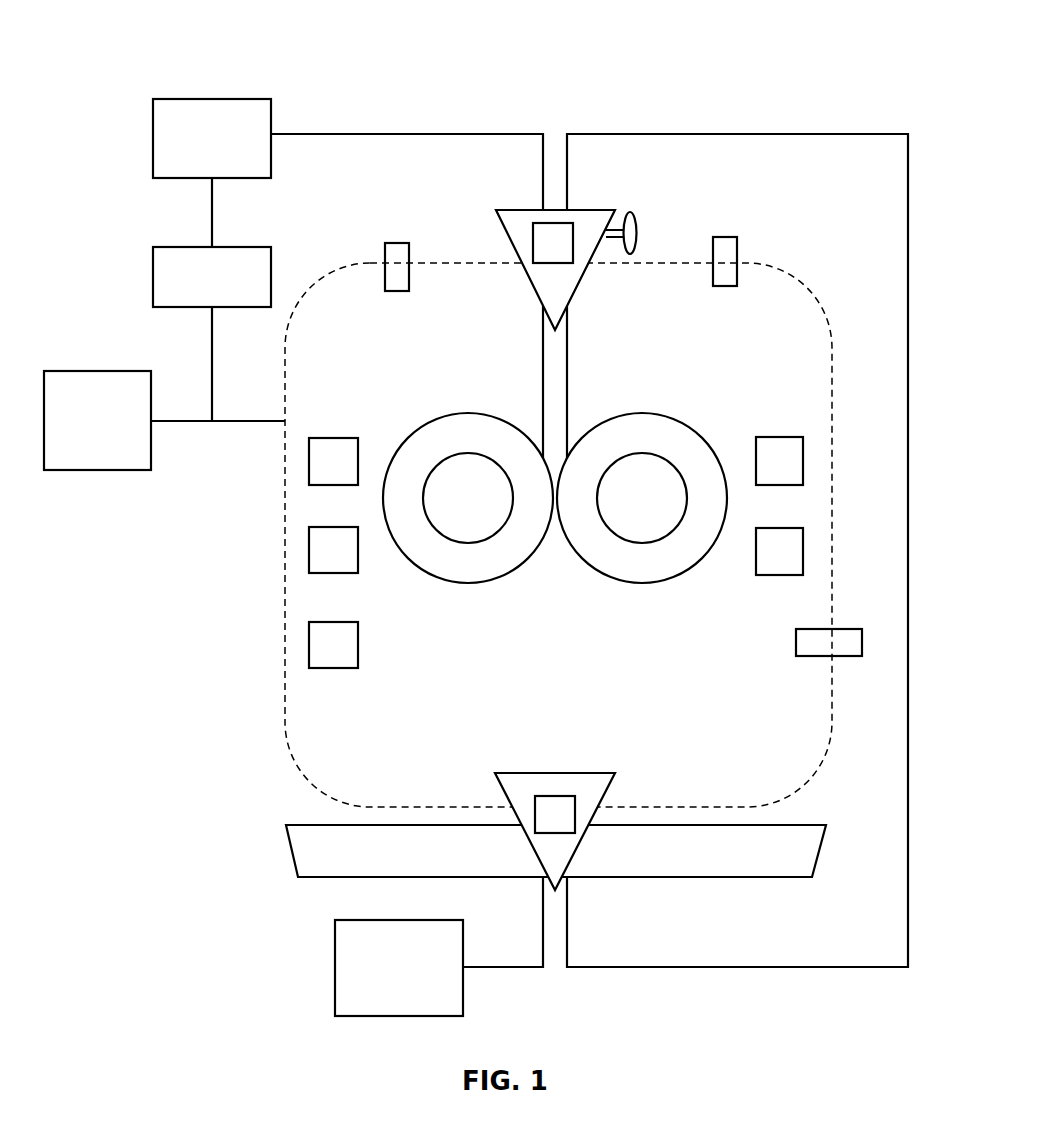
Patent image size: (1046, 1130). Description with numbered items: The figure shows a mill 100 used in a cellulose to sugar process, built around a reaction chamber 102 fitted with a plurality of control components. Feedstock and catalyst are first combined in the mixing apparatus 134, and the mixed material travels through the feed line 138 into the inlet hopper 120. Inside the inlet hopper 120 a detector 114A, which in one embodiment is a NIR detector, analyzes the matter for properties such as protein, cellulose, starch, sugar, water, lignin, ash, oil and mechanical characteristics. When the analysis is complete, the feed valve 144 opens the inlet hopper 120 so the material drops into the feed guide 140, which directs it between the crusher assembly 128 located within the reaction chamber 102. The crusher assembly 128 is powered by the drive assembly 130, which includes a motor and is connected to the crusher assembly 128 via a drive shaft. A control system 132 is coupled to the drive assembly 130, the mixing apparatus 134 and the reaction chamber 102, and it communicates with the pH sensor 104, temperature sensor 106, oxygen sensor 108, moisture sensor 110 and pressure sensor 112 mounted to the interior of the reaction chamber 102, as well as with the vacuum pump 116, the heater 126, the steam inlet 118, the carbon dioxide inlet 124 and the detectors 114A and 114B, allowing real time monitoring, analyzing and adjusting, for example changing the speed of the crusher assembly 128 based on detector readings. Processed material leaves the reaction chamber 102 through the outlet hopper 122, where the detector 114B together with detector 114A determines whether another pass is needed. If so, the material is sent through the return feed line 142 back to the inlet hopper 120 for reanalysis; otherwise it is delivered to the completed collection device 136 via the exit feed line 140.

The mill 100 is at (167, 48).
The reaction chamber 102 is at (293, 768).
The pH sensor 104 is at (309, 465).
The temperature sensor 106 is at (309, 553).
The oxygen sensor 108 is at (309, 645).
The moisture sensor 110 is at (803, 461).
The pressure sensor 112 is at (803, 551).
The detector 114A is at (533, 254).
The detector 114B is at (568, 796).
The vacuum pump 116 is at (862, 642).
The steam inlet 118 is at (385, 250).
The inlet hopper 120 is at (572, 300).
The outlet hopper 122 is at (507, 773).
The carbon dioxide inlet 124 is at (737, 245).
The heater 126 is at (293, 857).
The crusher assembly 128 is at (534, 551).
The drive assembly 130 is at (153, 277).
The control system 132 is at (96, 470).
The mixing apparatus 134 is at (153, 137).
The completed collection device 136 is at (335, 968).
The feed line 138 is at (338, 134).
The feed guide 140 is at (543, 350).
The return feed line 142 is at (630, 967).
The feed valve 144 is at (637, 222).